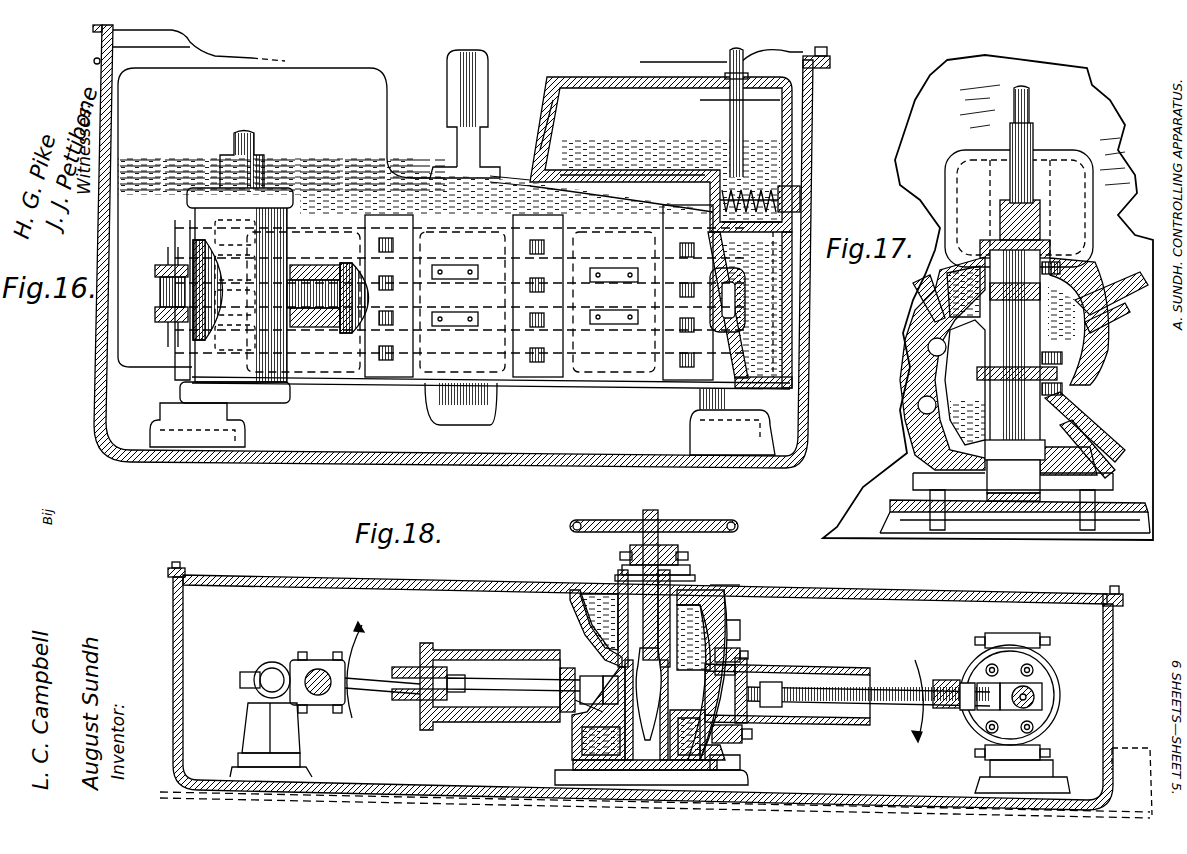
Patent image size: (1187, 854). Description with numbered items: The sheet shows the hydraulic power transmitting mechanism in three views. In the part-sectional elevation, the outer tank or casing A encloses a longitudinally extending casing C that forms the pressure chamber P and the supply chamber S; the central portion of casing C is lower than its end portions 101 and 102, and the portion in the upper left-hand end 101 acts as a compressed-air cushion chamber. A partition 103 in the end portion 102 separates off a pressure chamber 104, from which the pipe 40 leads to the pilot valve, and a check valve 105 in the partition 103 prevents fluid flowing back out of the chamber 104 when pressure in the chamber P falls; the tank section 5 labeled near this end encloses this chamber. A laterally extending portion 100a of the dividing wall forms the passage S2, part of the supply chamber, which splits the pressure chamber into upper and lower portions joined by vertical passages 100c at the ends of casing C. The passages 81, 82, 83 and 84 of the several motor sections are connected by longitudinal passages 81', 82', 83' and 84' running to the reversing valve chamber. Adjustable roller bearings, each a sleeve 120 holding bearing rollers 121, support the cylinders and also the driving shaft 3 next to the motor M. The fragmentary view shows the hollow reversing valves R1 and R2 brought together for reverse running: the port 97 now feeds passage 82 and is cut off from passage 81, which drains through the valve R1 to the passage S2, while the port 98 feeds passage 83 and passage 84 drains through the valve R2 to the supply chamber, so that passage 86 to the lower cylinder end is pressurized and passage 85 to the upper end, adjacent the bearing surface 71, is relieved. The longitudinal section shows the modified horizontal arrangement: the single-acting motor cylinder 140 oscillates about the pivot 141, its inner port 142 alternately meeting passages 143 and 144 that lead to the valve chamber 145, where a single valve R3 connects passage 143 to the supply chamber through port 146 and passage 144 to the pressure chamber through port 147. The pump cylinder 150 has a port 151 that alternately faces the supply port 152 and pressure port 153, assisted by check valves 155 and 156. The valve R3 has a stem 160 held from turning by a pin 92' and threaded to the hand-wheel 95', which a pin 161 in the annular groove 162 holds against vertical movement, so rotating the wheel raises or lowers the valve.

In FIG. 16, the end portion of casing C 101 is at (398, 137).
In FIG. 16, the fluid tank 5 is at (565, 135).
In FIG. 18, the fluid tank 5 is at (712, 590).
In FIG. 16, the end portion of casing C 102 is at (540, 138).
In FIG. 16, the partition 103 is at (648, 168).
In FIG. 16, the pipe 40 is at (730, 118).
In FIG. 16, the separate pressure chamber 104 is at (772, 112).
In FIG. 16, the check valve 105 is at (722, 190).
In FIG. 16, the laterally extending portion of partition wall 100a is at (780, 238).
In FIG. 16, the vertical passage 100c is at (773, 322).
In FIG. 16, the passage S2 is at (748, 298).
In FIG. 16, the pressure chamber P is at (773, 245).
In FIG. 17, the pressure chamber P is at (962, 195).
In FIG. 18, the pressure chamber P is at (760, 770).
In FIG. 16, the casing C is at (590, 387).
In FIG. 16, the passage 81 is at (489, 230).
In FIG. 17, the passage 81 is at (1088, 267).
In FIG. 16, the passage 82 is at (487, 268).
In FIG. 17, the passage 82 is at (1084, 363).
In FIG. 16, the passage 83 is at (485, 310).
In FIG. 17, the passage 83 is at (1084, 386).
In FIG. 16, the passage 84 is at (485, 353).
In FIG. 17, the passage 84 is at (1091, 470).
In FIG. 16, the longitudinal passage 81' is at (661, 232).
In FIG. 16, the longitudinal passage 82' is at (662, 274).
In FIG. 16, the longitudinal passage 83' is at (662, 311).
In FIG. 16, the longitudinal passage 84' is at (662, 356).
In FIG. 16, the motor M is at (280, 392).
In FIG. 16, the bearing rollers 121 is at (160, 290).
In FIG. 16, the bearing sleeve 120 is at (165, 312).
In FIG. 16, the outer tank or casing A is at (100, 322).
In FIG. 17, the supply chamber S is at (1080, 215).
In FIG. 18, the supply chamber S is at (730, 608).
In FIG. 17, the reversing valve R1 is at (1115, 340).
In FIG. 17, the reversing valve R2 is at (1075, 548).
In FIG. 18, the reversing valve R3 is at (722, 760).
In FIG. 17, the port 98 is at (1017, 293).
In FIG. 17, the port 97 is at (920, 295).
In FIG. 17, the passage 85 is at (1110, 290).
In FIG. 17, the contact arm 71 is at (1112, 322).
In FIG. 17, the passage 86 is at (1100, 440).
In FIG. 18, the pivot 141 is at (503, 678).
In FIG. 18, the motor cylinder 140 is at (507, 652).
In FIG. 18, the passage 143 is at (608, 660).
In FIG. 18, the port 142 is at (585, 712).
In FIG. 18, the passage 144 is at (585, 748).
In FIG. 18, the valve chamber 145 is at (612, 600).
In FIG. 18, the port 147 is at (646, 704).
In FIG. 18, the hand-wheel 95' is at (665, 514).
In FIG. 18, the valve stem 160 is at (640, 572).
In FIG. 18, the pin 161 is at (622, 555).
In FIG. 18, the annular groove 162 is at (668, 553).
In FIG. 18, the pin 92' is at (665, 569).
In FIG. 18, the port 146 is at (740, 630).
In FIG. 18, the port 152 is at (740, 650).
In FIG. 18, the check valve 155 is at (735, 668).
In FIG. 18, the port 151 is at (772, 675).
In FIG. 18, the pump cylinder 150 is at (820, 668).
In FIG. 18, the check valve 156 is at (740, 742).
In FIG. 18, the port 153 is at (742, 762).
In FIG. 18, the driving shaft 3 is at (1028, 697).